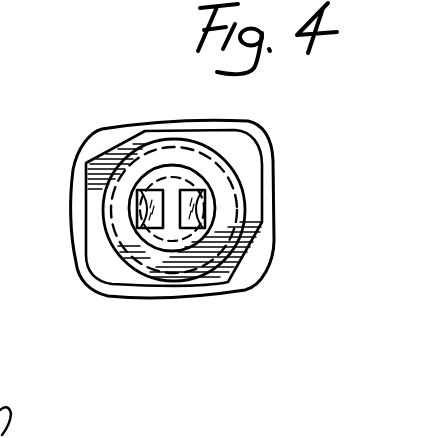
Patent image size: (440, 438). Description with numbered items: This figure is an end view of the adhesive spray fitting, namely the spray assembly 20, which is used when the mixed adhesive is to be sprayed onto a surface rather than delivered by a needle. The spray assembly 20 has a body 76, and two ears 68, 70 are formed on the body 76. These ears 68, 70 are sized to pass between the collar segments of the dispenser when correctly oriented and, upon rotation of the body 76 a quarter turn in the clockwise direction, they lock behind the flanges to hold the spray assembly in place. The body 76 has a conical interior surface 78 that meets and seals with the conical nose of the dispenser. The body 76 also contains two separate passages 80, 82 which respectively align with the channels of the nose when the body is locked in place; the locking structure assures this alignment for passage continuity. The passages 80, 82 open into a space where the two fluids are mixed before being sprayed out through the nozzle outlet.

The spray assembly 20 is at (86, 131).
The ear 68 is at (80, 230).
The ear 70 is at (238, 167).
The body 76 is at (259, 268).
The conical interior surface 78 is at (135, 203).
The passage 80 is at (188, 200).
The passage 82 is at (137, 227).